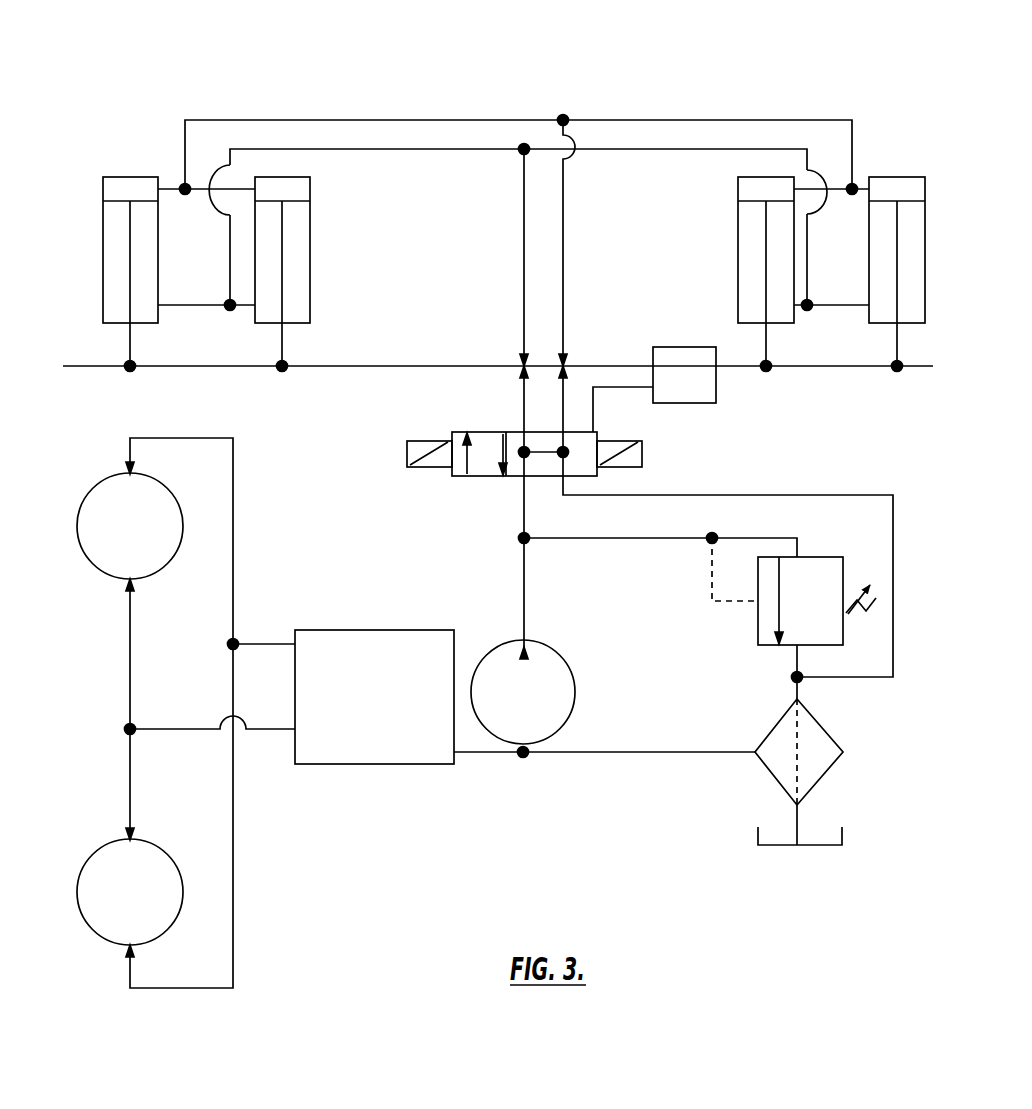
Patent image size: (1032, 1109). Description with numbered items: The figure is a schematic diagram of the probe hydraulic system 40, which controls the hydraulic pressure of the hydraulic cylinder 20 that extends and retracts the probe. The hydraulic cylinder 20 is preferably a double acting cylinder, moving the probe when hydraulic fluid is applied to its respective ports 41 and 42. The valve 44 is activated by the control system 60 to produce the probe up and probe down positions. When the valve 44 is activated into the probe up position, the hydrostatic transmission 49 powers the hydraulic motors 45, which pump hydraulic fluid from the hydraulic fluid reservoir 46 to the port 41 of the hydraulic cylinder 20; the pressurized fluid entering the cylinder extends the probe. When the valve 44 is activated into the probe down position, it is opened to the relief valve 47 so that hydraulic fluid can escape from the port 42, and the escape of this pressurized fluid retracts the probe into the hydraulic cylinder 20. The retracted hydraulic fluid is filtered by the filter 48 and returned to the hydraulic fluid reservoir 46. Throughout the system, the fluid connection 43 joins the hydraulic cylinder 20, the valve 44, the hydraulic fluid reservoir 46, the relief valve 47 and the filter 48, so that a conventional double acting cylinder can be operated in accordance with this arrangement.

The probe hydraulic system 40 is at (263, 30).
The hydraulic cylinder 20 is at (86, 212).
The port 41 is at (171, 186).
The port 42 is at (160, 306).
The fluid connection 43 is at (407, 150).
The valve 44 is at (462, 431).
The hydraulic motors 45 is at (155, 480).
The hydraulic fluid reservoir 46 is at (543, 655).
The relief valve 47 is at (817, 557).
The filter 48 is at (782, 717).
The hydrostatic transmission 49 is at (337, 630).
The control system 60 is at (692, 347).